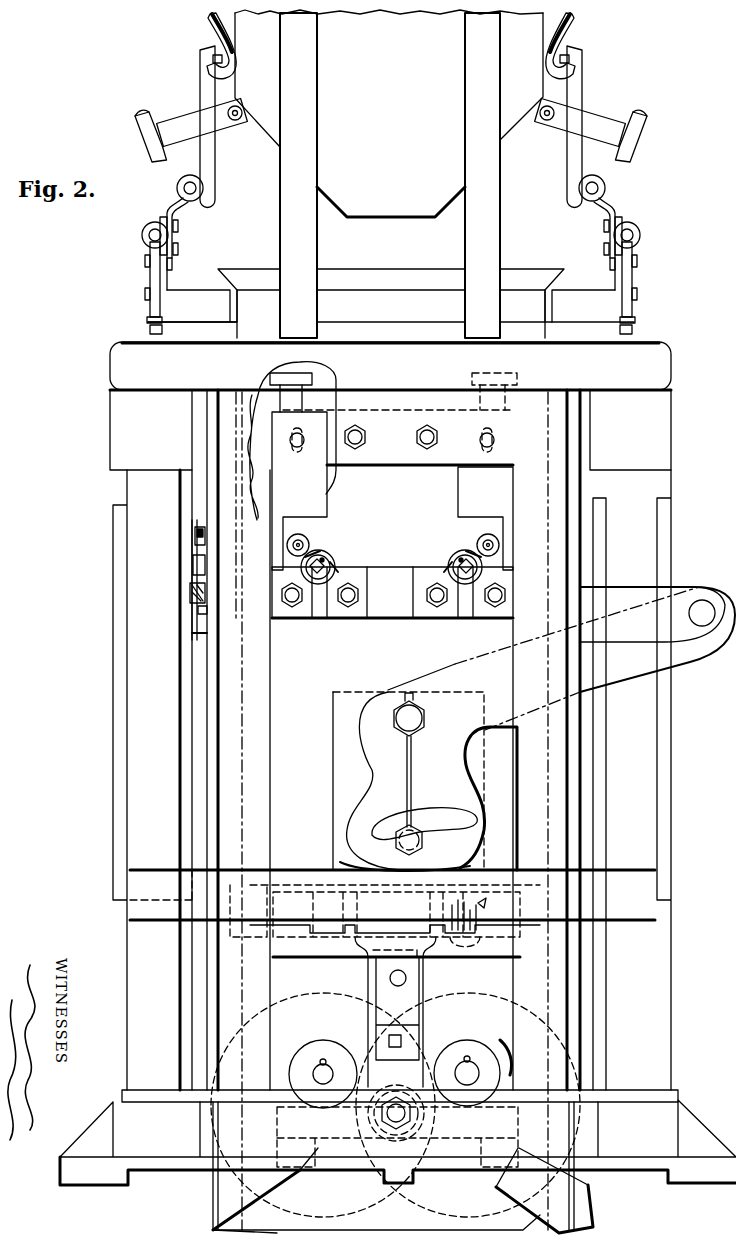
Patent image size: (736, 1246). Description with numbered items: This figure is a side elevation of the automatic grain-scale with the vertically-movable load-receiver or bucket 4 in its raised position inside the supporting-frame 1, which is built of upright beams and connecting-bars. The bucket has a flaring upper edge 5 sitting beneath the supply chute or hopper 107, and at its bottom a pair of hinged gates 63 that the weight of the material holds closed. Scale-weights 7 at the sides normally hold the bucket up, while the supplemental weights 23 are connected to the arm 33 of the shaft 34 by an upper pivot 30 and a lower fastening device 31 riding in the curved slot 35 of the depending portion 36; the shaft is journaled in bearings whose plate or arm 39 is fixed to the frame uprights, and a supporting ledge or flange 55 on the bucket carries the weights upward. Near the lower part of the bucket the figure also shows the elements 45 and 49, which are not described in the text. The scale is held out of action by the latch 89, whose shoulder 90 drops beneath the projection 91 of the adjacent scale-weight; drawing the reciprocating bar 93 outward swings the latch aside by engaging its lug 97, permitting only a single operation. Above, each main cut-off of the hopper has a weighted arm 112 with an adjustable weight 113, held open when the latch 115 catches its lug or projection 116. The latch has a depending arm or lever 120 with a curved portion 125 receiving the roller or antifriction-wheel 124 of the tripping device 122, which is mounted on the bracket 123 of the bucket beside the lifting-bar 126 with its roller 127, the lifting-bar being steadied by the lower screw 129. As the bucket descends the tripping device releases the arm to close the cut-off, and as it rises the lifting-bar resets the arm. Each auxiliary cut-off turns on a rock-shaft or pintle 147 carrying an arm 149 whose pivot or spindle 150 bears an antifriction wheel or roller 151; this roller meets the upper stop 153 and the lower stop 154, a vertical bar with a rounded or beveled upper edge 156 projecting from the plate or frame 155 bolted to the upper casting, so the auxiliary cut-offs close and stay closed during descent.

The supporting-frame 1 is at (128, 488).
The load-receiver or bucket 4 is at (376, 937).
The flaring upper edge 5 is at (247, 275).
The scale-weights 7 is at (113, 683).
The supplemental weights 23 is at (333, 771).
The upper pivot 30 is at (424, 717).
The lower fastening device 31 is at (414, 828).
The arm 33 is at (465, 661).
The shaft 34 is at (704, 600).
The curved slot 35 is at (372, 832).
The depending portion 36 is at (386, 785).
The plate or arm 39 is at (622, 586).
The roller 45 is at (318, 1058).
The roller pin 49 is at (325, 1058).
The supporting ledge or flange 55 is at (295, 890).
The hinged gate 63 is at (275, 1188).
The latch 89 is at (192, 633).
The shoulder 90 is at (198, 610).
The projection 91 is at (190, 594).
The reciprocating bar 93 is at (195, 533).
The lug 97 is at (193, 561).
The supply chute or hopper 107 is at (389, 113).
The weighted arm 112 is at (230, 125).
The adjustable weight 113 is at (150, 115).
The latch 115 is at (213, 59).
The lug or projection 116 is at (235, 121).
The depending arm or lever 120 is at (215, 189).
The tripping device 122 is at (150, 300).
The bracket 123 is at (194, 297).
The roller or antifriction-wheel 124 is at (180, 180).
The curved portion 125 is at (212, 32).
The lifting-bar 126 is at (150, 279).
The roller 127 is at (147, 227).
The lower screw 129 is at (147, 329).
The rock-shaft or pintle 147 is at (336, 558).
The arm 149 is at (326, 558).
The pivot or spindle 150 is at (298, 534).
The antifriction wheel or roller 151 is at (308, 544).
The upper stop 153 is at (312, 376).
The lower stop 154 is at (312, 390).
The plate or frame 155 is at (338, 466).
The rounded or beveled upper edge 156 is at (250, 383).